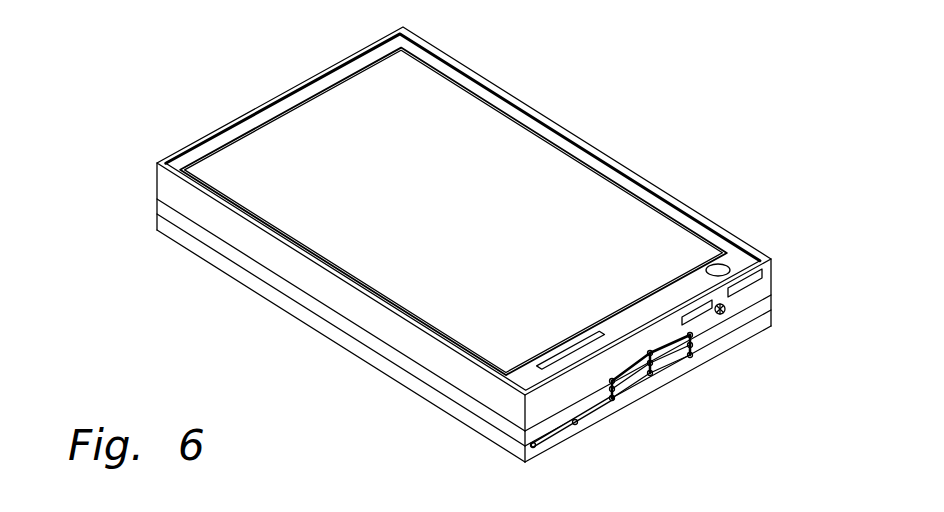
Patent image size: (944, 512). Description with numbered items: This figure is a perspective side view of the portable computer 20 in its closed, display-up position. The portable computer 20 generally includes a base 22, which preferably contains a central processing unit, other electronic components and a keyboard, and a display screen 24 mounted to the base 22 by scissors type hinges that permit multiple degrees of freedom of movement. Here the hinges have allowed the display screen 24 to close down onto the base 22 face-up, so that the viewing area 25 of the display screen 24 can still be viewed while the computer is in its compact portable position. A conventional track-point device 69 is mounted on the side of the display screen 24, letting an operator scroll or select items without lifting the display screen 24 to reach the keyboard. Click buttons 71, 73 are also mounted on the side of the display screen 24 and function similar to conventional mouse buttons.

The portable computer 20 is at (223, 335).
The base 22 is at (390, 373).
The display screen 24 is at (228, 143).
The viewing area 25 is at (352, 100).
The track-point device 69 is at (725, 313).
The click button 71 is at (697, 319).
The click button 73 is at (763, 274).